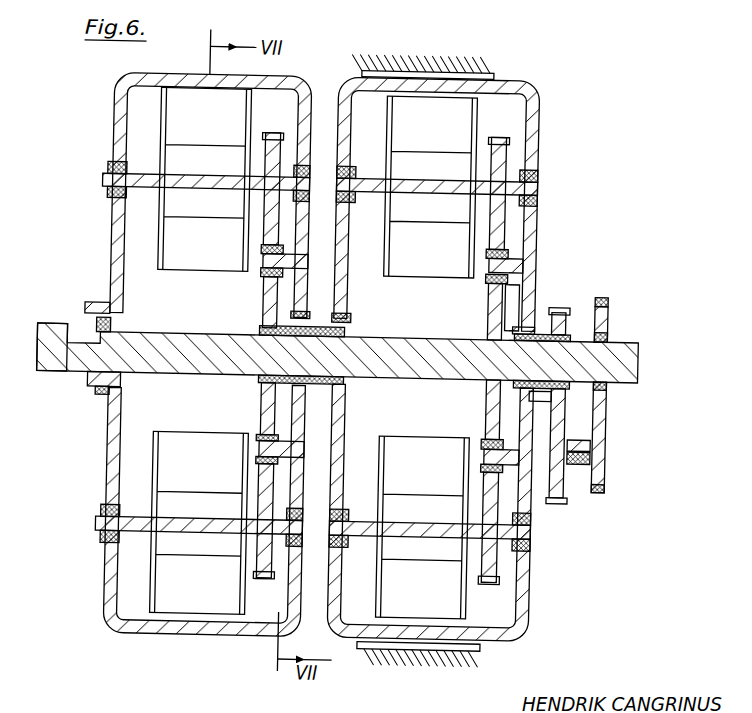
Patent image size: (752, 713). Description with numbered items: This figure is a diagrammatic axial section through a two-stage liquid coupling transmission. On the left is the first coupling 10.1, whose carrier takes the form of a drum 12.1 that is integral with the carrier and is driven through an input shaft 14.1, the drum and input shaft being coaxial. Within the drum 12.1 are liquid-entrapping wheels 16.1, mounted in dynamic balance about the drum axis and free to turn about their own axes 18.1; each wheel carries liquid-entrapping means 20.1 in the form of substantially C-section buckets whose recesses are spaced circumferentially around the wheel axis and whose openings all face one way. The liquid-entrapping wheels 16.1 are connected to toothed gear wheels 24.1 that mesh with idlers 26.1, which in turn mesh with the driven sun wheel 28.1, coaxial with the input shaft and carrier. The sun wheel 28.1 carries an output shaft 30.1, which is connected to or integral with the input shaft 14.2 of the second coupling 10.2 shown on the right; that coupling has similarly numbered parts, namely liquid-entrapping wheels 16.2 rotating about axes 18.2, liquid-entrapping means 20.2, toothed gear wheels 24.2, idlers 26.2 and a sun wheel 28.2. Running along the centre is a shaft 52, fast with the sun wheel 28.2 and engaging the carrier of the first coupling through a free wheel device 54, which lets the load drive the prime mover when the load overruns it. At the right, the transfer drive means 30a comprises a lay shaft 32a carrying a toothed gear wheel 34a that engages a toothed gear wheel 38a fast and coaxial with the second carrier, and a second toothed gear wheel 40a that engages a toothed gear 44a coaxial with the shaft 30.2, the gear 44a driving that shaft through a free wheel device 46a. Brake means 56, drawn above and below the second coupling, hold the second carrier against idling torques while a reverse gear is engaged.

The first coupling 10.1 is at (224, 331).
The second coupling 10.2 is at (489, 347).
The drum 12.1 is at (104, 255).
The input shaft 14.1 is at (59, 368).
The input shaft of the second coupling 14.2 is at (352, 300).
The liquid-entrapping wheels 16.1 is at (208, 330).
The liquid-entrapping wheels of the second coupling 16.2 is at (478, 120).
The axes of the liquid-entrapping wheels 18.1 is at (145, 192).
The axes of the liquid-entrapping wheels of the second coupling 18.2 is at (370, 193).
The liquid-entrapping means 20.1 is at (240, 103).
The liquid-entrapping means of the second coupling 20.2 is at (401, 278).
The toothed gear wheels 24.1 is at (273, 153).
The toothed gear wheels of the second coupling 24.2 is at (497, 175).
The idlers 26.1 is at (258, 463).
The idlers of the second coupling 26.2 is at (488, 251).
The sun wheel 28.1 is at (263, 282).
The sun wheel of the second coupling 28.2 is at (488, 316).
The output shaft 30.1 is at (321, 336).
The shaft 30.2 is at (638, 327).
The transfer drive means 30a is at (609, 489).
The lay shaft 32a is at (578, 460).
The toothed gear wheel 34a is at (559, 500).
The toothed gear wheel 38a is at (556, 305).
The toothed gear wheel 40a is at (605, 468).
The toothed gear 44a is at (601, 294).
The free wheel device 46a is at (605, 327).
The shaft 52 is at (409, 371).
The free wheel device 54 is at (100, 393).
The brake means 56 is at (493, 62).